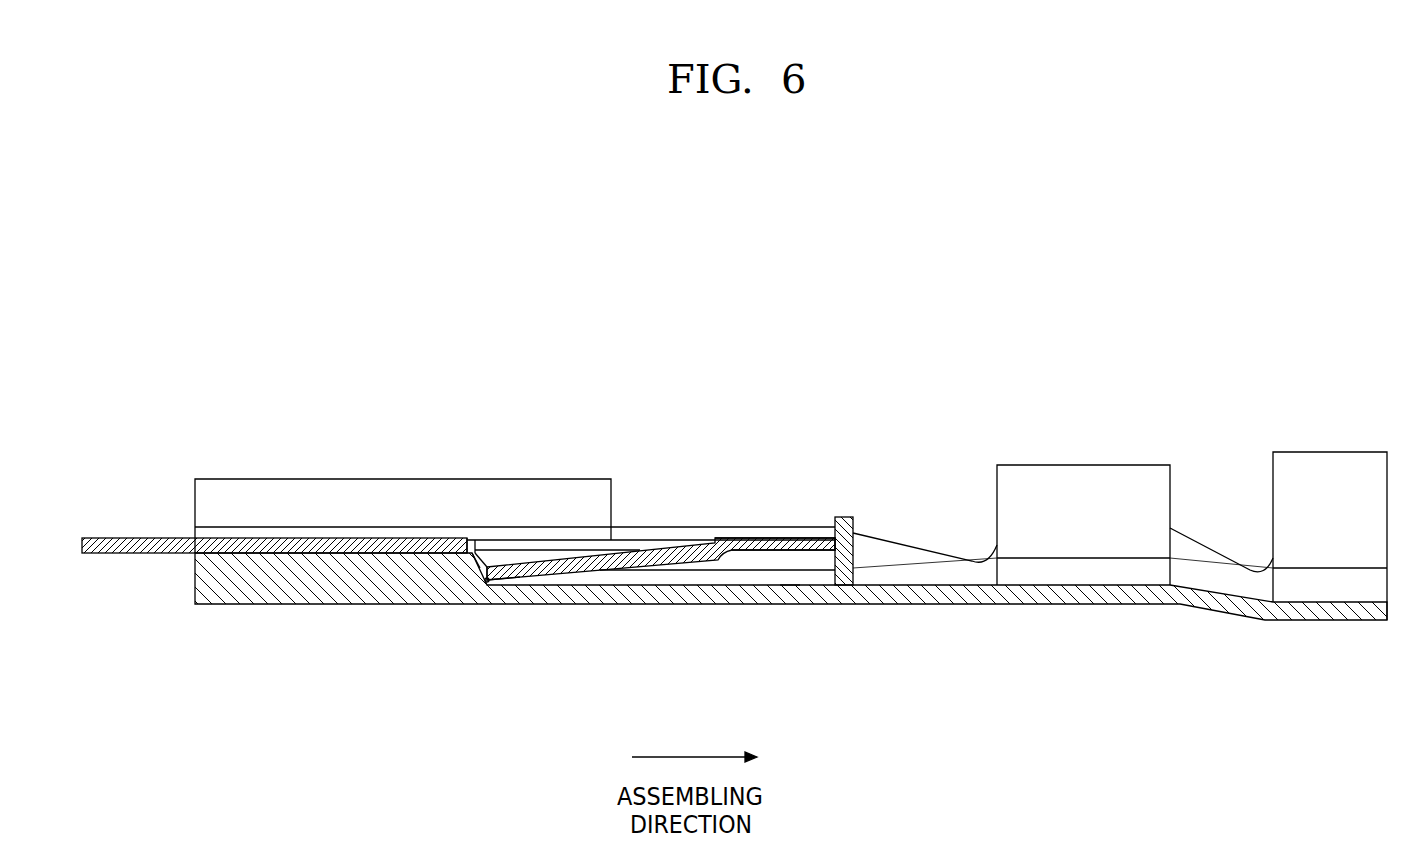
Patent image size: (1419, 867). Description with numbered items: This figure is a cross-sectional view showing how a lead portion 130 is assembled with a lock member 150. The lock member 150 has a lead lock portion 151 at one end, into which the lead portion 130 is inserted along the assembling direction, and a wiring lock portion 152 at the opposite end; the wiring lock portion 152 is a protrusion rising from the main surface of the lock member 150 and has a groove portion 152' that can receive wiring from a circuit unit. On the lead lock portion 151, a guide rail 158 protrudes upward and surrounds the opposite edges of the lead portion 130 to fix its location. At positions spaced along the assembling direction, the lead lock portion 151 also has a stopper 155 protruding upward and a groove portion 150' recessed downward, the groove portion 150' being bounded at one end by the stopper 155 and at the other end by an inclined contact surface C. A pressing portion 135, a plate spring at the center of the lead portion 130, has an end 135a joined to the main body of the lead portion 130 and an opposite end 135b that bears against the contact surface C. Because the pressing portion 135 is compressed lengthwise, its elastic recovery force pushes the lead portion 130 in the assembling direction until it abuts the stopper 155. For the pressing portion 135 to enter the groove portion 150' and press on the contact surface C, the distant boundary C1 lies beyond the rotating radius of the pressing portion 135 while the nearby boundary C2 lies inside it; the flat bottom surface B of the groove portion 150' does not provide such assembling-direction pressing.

The lead portion 130 is at (120, 554).
The pressing portion 135 is at (638, 558).
The end 135a is at (725, 540).
The opposite end 135b is at (522, 582).
The lock member 150 is at (1120, 524).
The groove portion 150' is at (717, 619).
The lead lock portion 151 is at (791, 464).
The wiring lock portion 152 is at (1083, 430).
The groove portion 152' is at (1290, 504).
The stopper 155 is at (845, 518).
The guide rail 158 is at (253, 497).
The contact surface C is at (468, 565).
The distant boundary C1 is at (476, 540).
The nearby boundary C2 is at (490, 585).
The bottom surface B is at (788, 587).